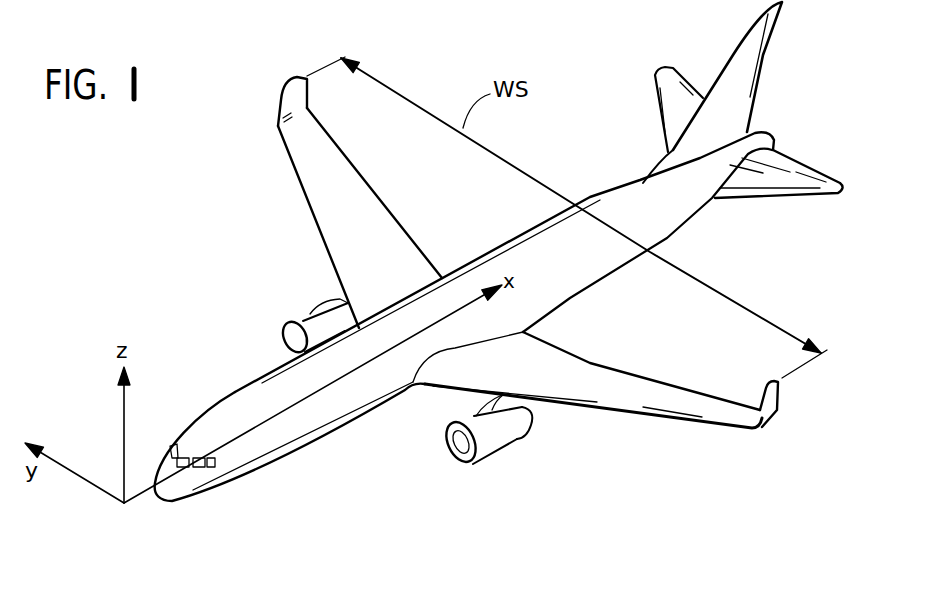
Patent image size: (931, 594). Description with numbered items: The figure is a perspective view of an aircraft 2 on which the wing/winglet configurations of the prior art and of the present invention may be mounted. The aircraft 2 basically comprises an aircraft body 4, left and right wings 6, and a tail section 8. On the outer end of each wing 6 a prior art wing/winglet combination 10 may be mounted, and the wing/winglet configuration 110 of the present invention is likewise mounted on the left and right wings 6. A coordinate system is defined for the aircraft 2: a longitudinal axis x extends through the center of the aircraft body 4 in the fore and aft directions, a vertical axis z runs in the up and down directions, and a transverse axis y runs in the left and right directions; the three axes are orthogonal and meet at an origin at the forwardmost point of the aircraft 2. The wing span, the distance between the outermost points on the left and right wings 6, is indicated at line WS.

The aircraft 2 is at (143, 270).
The aircraft body 4 is at (303, 433).
The left and right wings 6 is at (323, 205).
The tail section 8 is at (772, 97).
The wing/winglet combination 10 is at (452, 291).
The wing/winglet configuration 110 is at (268, 110).